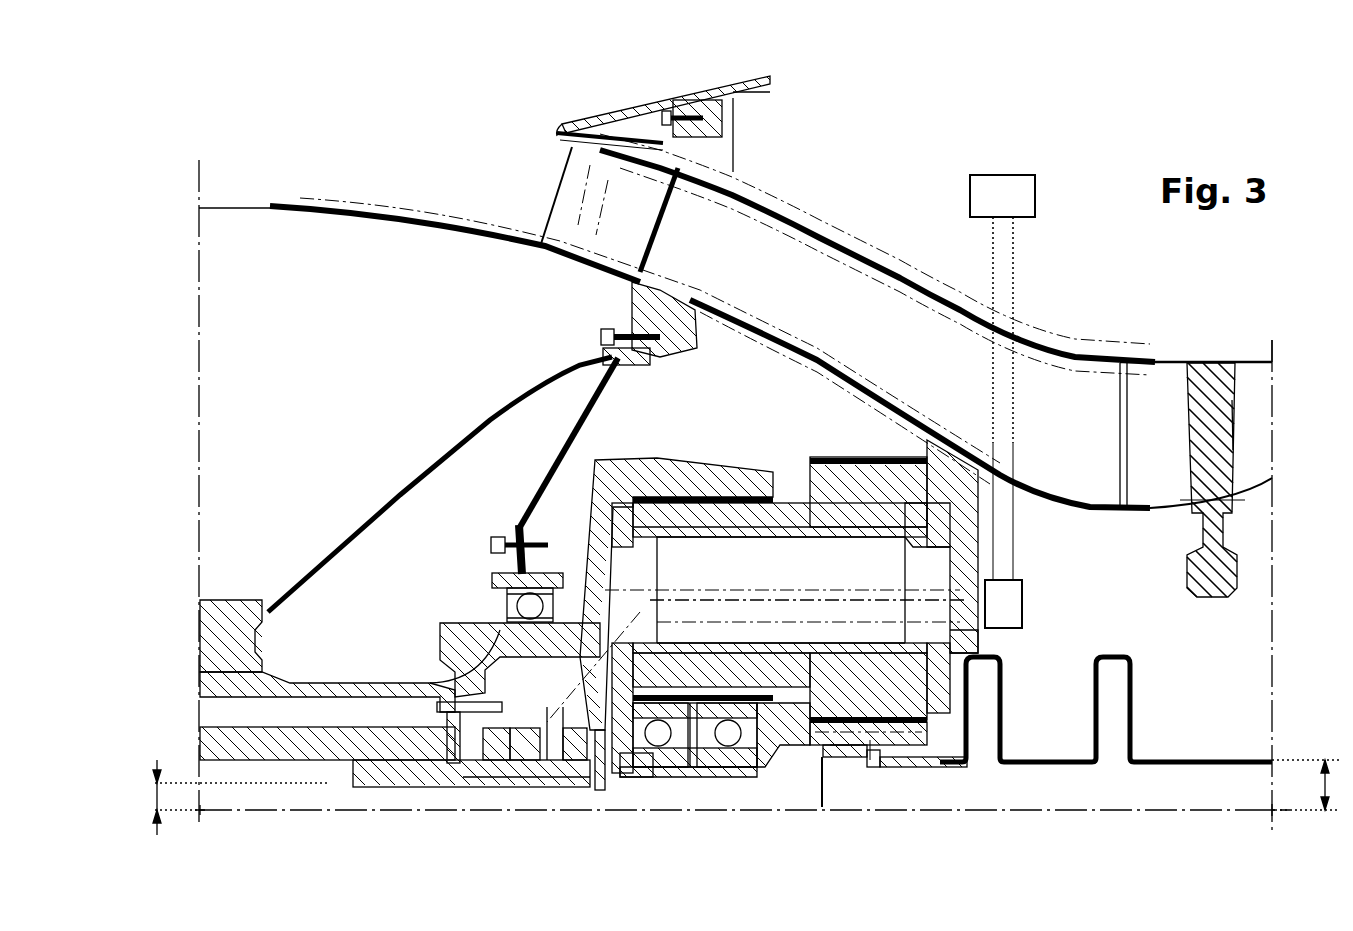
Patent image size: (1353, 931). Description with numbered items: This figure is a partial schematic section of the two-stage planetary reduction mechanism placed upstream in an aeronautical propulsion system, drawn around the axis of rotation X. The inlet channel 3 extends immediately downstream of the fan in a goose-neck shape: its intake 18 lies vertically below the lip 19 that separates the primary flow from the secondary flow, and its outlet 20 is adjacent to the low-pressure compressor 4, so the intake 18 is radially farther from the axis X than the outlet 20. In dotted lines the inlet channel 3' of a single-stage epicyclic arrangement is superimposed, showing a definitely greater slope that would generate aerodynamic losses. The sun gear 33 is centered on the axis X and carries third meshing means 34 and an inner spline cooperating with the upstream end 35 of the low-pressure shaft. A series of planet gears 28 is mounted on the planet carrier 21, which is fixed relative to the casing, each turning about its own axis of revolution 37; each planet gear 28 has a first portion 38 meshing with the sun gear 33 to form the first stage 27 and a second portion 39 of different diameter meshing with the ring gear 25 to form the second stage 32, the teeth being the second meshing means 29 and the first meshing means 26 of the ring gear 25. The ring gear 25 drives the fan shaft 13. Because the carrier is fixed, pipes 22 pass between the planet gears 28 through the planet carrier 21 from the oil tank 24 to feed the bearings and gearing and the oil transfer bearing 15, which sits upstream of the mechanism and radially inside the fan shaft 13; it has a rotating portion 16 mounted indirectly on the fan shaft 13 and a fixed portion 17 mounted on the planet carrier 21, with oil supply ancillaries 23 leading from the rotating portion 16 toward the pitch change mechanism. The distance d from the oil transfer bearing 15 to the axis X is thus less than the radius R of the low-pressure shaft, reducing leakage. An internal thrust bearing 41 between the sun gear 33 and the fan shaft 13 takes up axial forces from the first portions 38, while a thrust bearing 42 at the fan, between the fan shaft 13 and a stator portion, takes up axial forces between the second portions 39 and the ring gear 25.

The inlet channel 3 is at (611, 178).
The inlet channel (prior art, single-stage epicyclic) 3' is at (856, 254).
The low-pressure compressor 4 is at (1220, 340).
The fan shaft 13 is at (347, 672).
The oil transfer bearing 15 is at (470, 775).
The rotating portion 16 is at (392, 788).
The fixed portion 17 is at (522, 760).
The intake 18 is at (520, 203).
The lip 19 is at (640, 112).
The outlet 20 is at (1172, 398).
The planet carrier 21 is at (985, 638).
The pipes 22 is at (890, 608).
The oil supply ancillaries 23 is at (270, 760).
The oil tank 24 is at (1002, 196).
The ring gear 25 is at (677, 468).
The first meshing means 26 is at (718, 503).
The first stage 27 is at (855, 787).
The planet gears 28 is at (637, 455).
The second meshing means 29 is at (719, 510).
The second stage 32 is at (678, 792).
The sun gear 33 is at (838, 757).
The third meshing means 34 is at (912, 745).
The upstream end 35 is at (1060, 788).
The axis of revolution 37 is at (818, 588).
The first portion 38 is at (872, 748).
The second portion 39 is at (722, 770).
The internal thrust bearing 41 is at (650, 770).
The thrust bearing 42 is at (462, 596).
The distance d is at (233, 797).
The radius R is at (1310, 785).
The axis of rotation X is at (1225, 812).